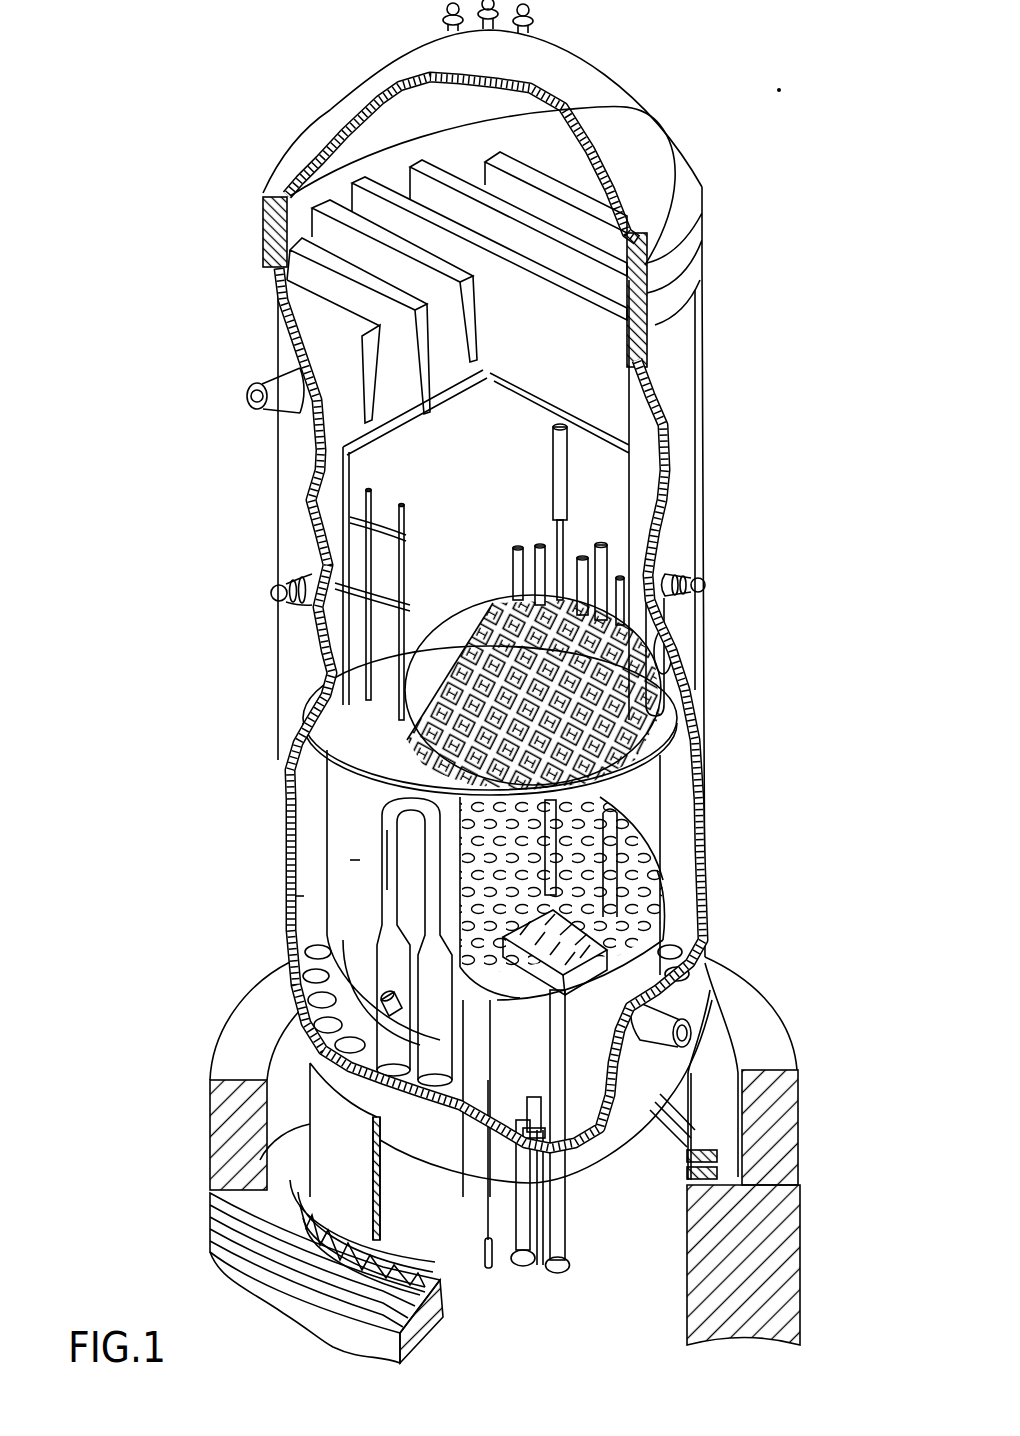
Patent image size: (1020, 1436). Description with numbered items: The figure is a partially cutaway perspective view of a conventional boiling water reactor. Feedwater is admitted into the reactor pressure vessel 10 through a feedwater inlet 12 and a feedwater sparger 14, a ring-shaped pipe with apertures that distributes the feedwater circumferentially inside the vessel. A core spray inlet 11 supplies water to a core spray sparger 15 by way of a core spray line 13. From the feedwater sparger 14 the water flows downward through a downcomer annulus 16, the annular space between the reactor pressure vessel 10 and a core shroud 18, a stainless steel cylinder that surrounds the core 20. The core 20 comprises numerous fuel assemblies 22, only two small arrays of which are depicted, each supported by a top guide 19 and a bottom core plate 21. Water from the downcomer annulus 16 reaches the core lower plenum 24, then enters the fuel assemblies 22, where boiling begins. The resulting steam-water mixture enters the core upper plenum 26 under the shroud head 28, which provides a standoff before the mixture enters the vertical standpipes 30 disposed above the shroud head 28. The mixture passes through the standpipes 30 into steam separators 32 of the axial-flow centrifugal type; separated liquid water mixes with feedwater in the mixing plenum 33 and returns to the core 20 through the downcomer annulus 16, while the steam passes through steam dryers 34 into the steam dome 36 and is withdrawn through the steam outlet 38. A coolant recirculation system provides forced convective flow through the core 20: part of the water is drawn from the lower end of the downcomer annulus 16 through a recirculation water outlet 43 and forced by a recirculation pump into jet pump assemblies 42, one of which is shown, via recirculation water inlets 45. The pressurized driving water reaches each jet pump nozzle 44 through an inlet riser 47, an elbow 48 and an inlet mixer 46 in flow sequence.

The reactor pressure vessel 10 is at (285, 932).
The core spray inlet 11 is at (272, 594).
The feedwater inlet 12 is at (705, 585).
The core spray line 13 is at (655, 692).
The feedwater sparger 14 is at (664, 576).
The core spray sparger 15 is at (612, 752).
The downcomer annulus 16 is at (312, 898).
The core shroud 18 is at (332, 773).
The top guide 19 is at (660, 642).
The core 20 is at (668, 828).
The bottom core plate 21 is at (655, 882).
The fuel assemblies 22 is at (557, 803).
The core lower plenum 24 is at (578, 1086).
The core upper plenum 26 is at (496, 604).
The shroud head 28 is at (436, 560).
The vertical standpipes 30 is at (560, 548).
The steam separators 32 is at (556, 452).
The mixing plenum 33 is at (501, 481).
The steam dryers 34 is at (485, 318).
The steam dome 36 is at (397, 103).
The steam outlet 38 is at (250, 388).
The jet pump assemblies 42 is at (368, 868).
The recirculation water outlet 43 is at (686, 1040).
The jet pump nozzle 44 is at (393, 1062).
The recirculation water inlets 45 is at (386, 1000).
The inlet mixer 46 is at (388, 842).
The inlet riser 47 is at (410, 900).
The elbow 48 is at (382, 815).